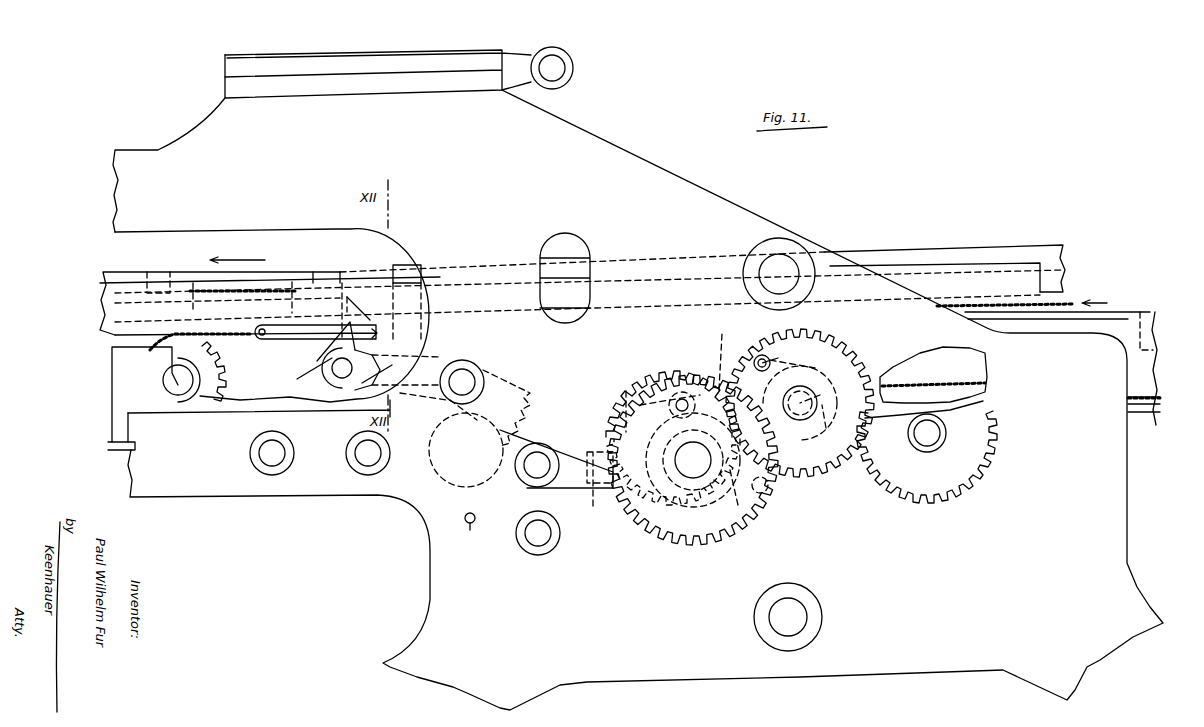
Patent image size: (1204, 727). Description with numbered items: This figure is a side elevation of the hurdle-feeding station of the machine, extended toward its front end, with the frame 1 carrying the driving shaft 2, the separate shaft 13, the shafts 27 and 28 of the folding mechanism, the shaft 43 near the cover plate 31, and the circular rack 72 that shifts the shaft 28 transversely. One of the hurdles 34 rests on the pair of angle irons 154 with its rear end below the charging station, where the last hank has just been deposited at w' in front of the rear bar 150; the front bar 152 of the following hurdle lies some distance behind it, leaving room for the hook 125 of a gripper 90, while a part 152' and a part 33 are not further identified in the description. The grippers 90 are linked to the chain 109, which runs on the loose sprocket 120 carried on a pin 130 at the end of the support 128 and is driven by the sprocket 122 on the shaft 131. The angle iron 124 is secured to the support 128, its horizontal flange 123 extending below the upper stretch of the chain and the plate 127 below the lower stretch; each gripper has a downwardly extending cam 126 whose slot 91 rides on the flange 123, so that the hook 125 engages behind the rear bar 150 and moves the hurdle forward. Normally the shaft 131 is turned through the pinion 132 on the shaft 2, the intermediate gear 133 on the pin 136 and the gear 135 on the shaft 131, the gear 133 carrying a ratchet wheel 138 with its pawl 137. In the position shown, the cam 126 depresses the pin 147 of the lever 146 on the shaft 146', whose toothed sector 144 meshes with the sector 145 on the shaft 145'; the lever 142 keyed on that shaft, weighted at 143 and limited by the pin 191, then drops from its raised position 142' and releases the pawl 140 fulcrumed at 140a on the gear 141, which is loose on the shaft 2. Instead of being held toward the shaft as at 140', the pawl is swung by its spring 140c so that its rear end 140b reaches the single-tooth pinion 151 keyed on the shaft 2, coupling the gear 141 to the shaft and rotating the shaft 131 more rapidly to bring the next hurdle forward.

The frame 1 is at (118, 206).
The driving shaft 2 is at (688, 470).
The separate shaft 13 is at (805, 613).
The shaft 27 is at (272, 465).
The shaft 28 is at (368, 465).
The cover plate 31 is at (413, 52).
The slide bar 33 is at (112, 311).
The hurdles 34 is at (123, 271).
The shaft 43 is at (564, 70).
The circular rack 72 is at (542, 542).
The grippers 90 is at (298, 335).
The slot 91 is at (315, 331).
The chain 109 is at (233, 338).
The sprocket 120 is at (226, 384).
The sprocket 122 is at (927, 393).
The horizontal flange 123 is at (365, 305).
The angle iron 124 is at (392, 352).
The hook 125 is at (327, 349).
The cam 126 is at (303, 373).
The plate 127 is at (125, 448).
The support 128 is at (118, 389).
The pin 130 is at (202, 377).
The shaft 131 is at (927, 452).
The pinion 132 is at (690, 510).
The intermediate gear 133 is at (845, 355).
The gear 135 is at (984, 441).
The pin 136 is at (820, 395).
The pawl 137 is at (765, 342).
The ratchet wheel 138 is at (826, 428).
The pawl 140 is at (666, 438).
The raised pawl position 140' is at (657, 403).
The fulcrum 140a is at (684, 399).
The rear end of pawl 140b is at (738, 505).
The spring 140c is at (770, 505).
The gear 141 is at (700, 537).
The lever 142 is at (556, 471).
The raised lever position 142' is at (599, 488).
The weight 143 is at (447, 472).
The toothed sector 144 is at (532, 392).
The toothed sector 145 is at (540, 427).
The shaft 145' is at (533, 478).
The lever 146 is at (359, 398).
The shaft 146' is at (460, 385).
The pin 147 is at (360, 363).
The rear bar 150 is at (330, 271).
The single-tooth pinion 151 is at (732, 355).
The front bar 152 is at (401, 293).
The stop block 152' is at (167, 269).
The angle irons 154 is at (118, 334).
The pin 191 is at (474, 531).
The deposited hank position w' is at (243, 270).